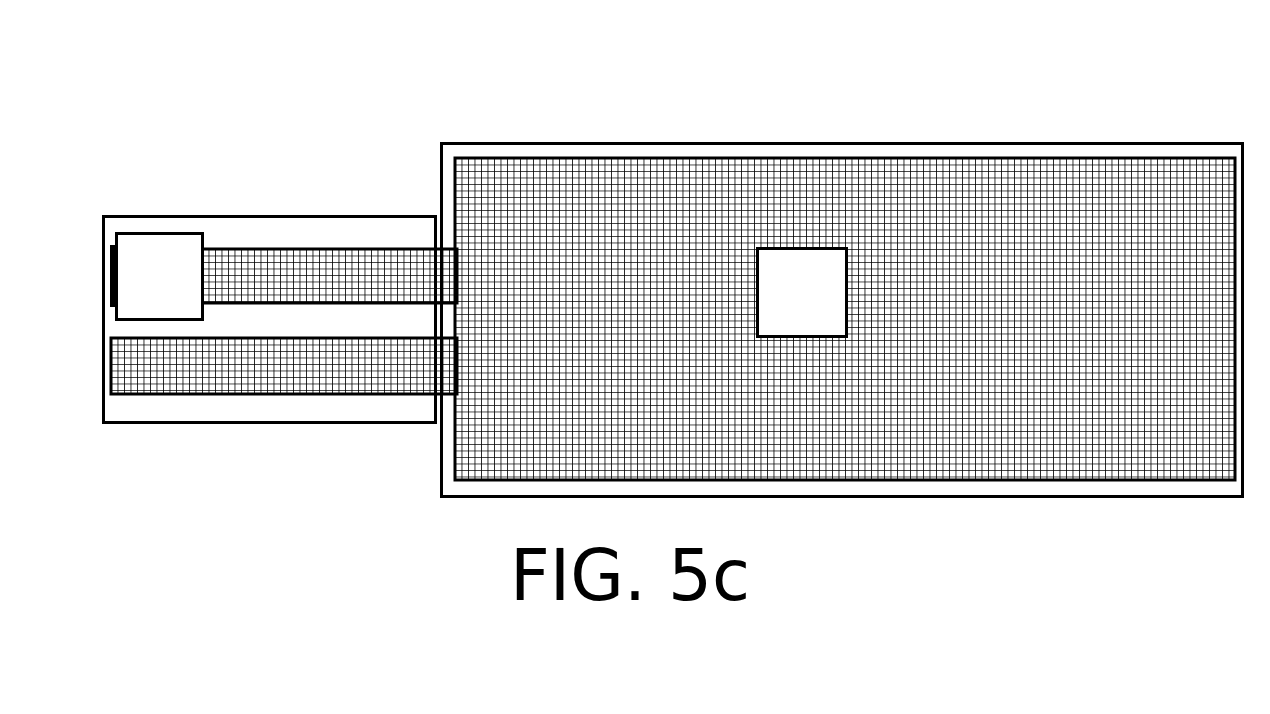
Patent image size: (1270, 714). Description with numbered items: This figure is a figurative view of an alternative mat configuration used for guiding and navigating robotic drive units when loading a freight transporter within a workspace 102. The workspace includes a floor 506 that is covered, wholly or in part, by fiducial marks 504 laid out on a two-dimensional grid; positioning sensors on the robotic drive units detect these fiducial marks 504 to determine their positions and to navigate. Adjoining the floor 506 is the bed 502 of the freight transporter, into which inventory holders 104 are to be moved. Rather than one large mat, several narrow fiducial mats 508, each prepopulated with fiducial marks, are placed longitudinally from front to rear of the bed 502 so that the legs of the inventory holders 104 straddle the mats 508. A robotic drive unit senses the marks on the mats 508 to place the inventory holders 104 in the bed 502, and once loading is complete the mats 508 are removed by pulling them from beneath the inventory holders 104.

The device 102 is at (678, 281).
The inventory holder 104 is at (478, 285).
The bed 502 is at (112, 226).
The fiducial marks 504 is at (902, 160).
The floor 506 is at (1010, 152).
The fiducial mat 508 is at (265, 250).